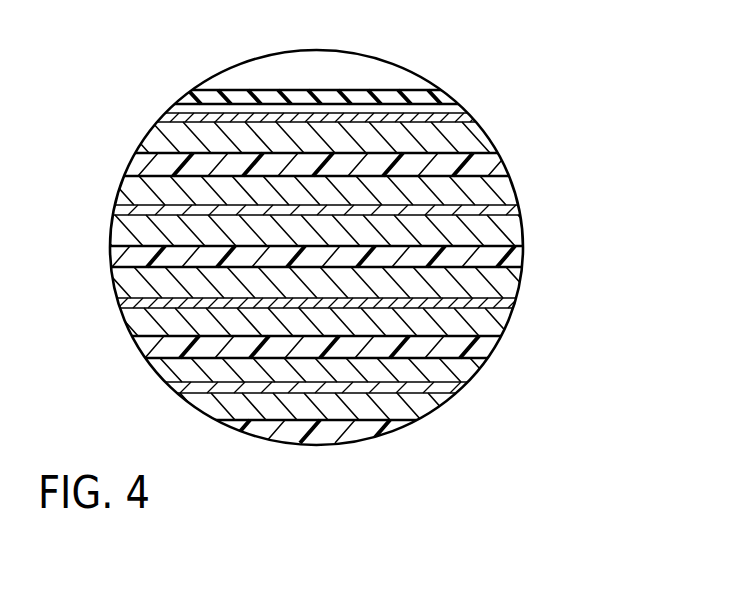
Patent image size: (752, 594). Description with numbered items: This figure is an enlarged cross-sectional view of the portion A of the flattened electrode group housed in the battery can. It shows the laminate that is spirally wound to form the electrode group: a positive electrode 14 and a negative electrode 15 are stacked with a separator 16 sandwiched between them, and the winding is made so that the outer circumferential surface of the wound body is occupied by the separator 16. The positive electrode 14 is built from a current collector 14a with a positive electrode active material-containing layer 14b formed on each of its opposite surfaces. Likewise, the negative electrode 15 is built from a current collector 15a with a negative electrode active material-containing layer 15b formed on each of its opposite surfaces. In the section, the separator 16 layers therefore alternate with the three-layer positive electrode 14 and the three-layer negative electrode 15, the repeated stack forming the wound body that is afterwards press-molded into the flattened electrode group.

The portion A is at (428, 60).
The positive electrode 14 is at (356, 315).
The current collector 14a is at (445, 387).
The positive electrode active material-containing layer 14b is at (420, 410).
The negative electrode 15 is at (359, 221).
The current collector 15a is at (490, 305).
The negative electrode active material-containing layer 15b is at (488, 320).
The separator 16 is at (278, 430).